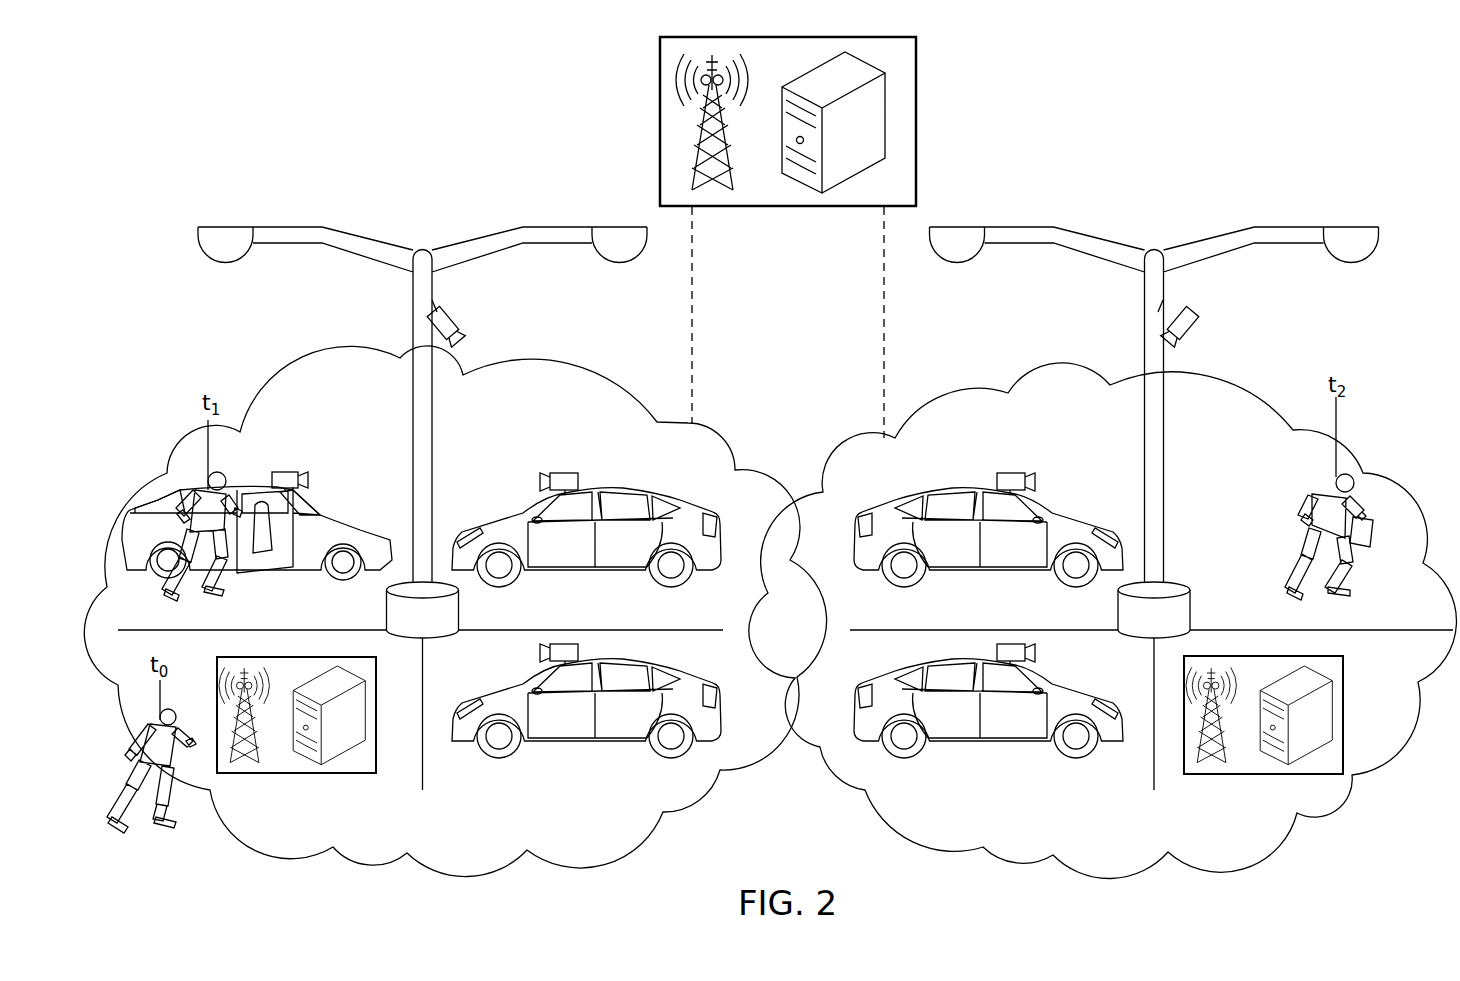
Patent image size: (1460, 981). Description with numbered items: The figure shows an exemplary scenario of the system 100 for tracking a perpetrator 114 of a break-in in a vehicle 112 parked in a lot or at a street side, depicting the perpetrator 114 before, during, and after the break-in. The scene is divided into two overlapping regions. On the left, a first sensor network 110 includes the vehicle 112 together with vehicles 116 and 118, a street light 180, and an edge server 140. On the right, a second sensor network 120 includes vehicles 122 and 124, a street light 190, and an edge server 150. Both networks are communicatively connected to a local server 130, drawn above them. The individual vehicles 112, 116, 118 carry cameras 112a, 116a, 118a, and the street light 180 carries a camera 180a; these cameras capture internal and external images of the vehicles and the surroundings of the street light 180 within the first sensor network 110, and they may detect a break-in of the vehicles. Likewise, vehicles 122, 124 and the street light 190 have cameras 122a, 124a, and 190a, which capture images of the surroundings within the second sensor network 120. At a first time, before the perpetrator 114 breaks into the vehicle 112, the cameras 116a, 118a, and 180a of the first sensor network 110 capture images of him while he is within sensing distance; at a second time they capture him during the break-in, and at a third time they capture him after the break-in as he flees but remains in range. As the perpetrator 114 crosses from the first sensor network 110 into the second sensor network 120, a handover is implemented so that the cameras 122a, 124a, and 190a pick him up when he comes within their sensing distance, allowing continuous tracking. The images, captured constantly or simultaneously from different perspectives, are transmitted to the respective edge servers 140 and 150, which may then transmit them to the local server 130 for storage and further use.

The system 100 is at (232, 115).
The first sensor network 110 is at (318, 375).
The vehicle 112 is at (352, 515).
The camera 112a is at (288, 472).
The perpetrator 114 is at (218, 467).
The vehicle 116 is at (470, 522).
The camera 116a is at (552, 473).
The vehicle 118 is at (470, 692).
The camera 118a is at (552, 644).
The second sensor network 120 is at (1276, 406).
The vehicle 122 is at (1100, 522).
The camera 122a is at (1012, 473).
The vehicle 124 is at (1100, 692).
The camera 124a is at (1012, 644).
The local server 130 is at (660, 75).
The edge server 140 is at (297, 774).
The edge server 150 is at (1262, 775).
The street light 180 is at (422, 250).
The camera 180a is at (462, 325).
The street light 190 is at (1153, 250).
The camera 190a is at (1196, 325).